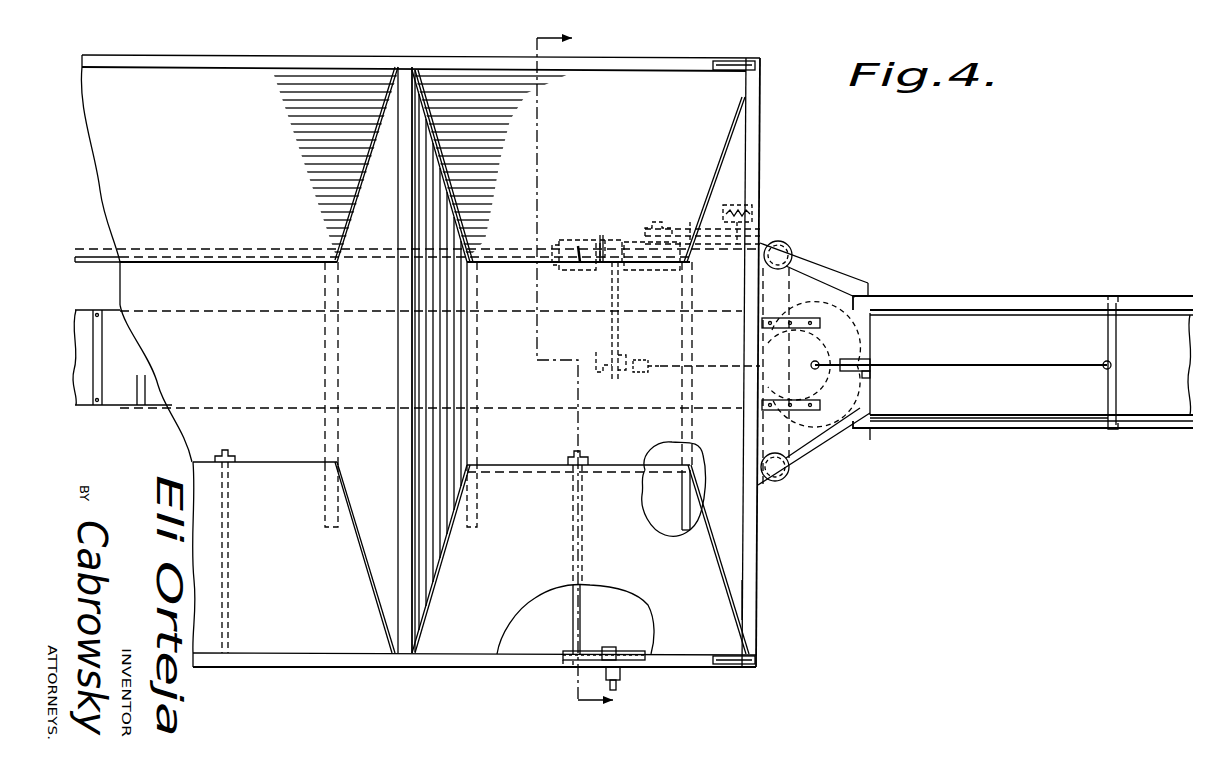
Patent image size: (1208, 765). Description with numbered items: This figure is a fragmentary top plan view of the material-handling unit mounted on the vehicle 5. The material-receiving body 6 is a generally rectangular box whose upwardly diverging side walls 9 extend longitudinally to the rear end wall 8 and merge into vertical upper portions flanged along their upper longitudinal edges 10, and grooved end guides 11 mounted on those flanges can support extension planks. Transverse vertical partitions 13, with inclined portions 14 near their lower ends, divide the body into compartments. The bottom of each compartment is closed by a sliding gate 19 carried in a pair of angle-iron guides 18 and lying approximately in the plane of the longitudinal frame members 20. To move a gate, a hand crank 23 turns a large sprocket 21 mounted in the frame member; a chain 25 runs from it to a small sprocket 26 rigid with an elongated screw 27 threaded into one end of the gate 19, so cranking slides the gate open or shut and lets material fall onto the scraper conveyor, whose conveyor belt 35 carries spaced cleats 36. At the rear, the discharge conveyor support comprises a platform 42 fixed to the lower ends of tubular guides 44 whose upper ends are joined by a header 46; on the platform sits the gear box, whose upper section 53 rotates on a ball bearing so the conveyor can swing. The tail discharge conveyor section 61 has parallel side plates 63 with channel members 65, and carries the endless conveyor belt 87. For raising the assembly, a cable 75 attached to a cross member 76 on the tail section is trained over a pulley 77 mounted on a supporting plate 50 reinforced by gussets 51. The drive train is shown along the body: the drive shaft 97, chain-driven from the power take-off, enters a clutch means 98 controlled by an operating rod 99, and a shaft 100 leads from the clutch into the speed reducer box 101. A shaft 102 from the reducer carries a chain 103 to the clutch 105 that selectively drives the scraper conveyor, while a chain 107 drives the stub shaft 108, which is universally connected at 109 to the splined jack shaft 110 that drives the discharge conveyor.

The vehicle 5 is at (575, 368).
The material-receiving body 6 is at (759, 600).
The rear end wall 8 is at (757, 545).
The side walls 9 is at (239, 360).
The top and bottom frame rails 10 is at (338, 56).
The grooved end guides 11 is at (732, 72).
The vertical partitions 13 is at (398, 365).
The inclined portions 14 is at (340, 435).
The guides 18 is at (325, 502).
The gate 19 is at (281, 464).
The frame members 20 is at (541, 668).
The large sprocket 21 is at (627, 650).
The hand crank 23 is at (620, 686).
The chain 25 is at (592, 648).
The small sprocket 26 is at (565, 651).
The elongated screw 27 is at (572, 612).
The conveyor belt 35 is at (120, 406).
The cleats 36 is at (93, 347).
The platform 42 is at (870, 284).
The tubular guides 44 is at (788, 248).
The header 46 is at (818, 462).
The supporting plate 50 is at (832, 273).
The gussets 51 is at (800, 318).
The upper gear box section 53 is at (856, 346).
The spout 61 is at (970, 294).
The side plates 63 is at (1052, 308).
The channel member 65 is at (1110, 297).
The cable 75 is at (988, 364).
The cross member 76 is at (1107, 345).
The pulley 77 is at (872, 376).
The endless conveyor belt 87 is at (1000, 416).
The drive shaft 97 is at (106, 262).
The clutch means 98 is at (568, 241).
The operating rod 99 is at (604, 242).
The shaft 100 is at (597, 268).
The speed reducer box 101 is at (652, 270).
The shaft 102 is at (660, 222).
The chain 103 is at (690, 221).
The clutch 105 is at (752, 206).
The chain 107 is at (606, 342).
The stub shaft 108 is at (613, 378).
The universal connection 109 is at (640, 360).
The jack shaft 110 is at (700, 362).